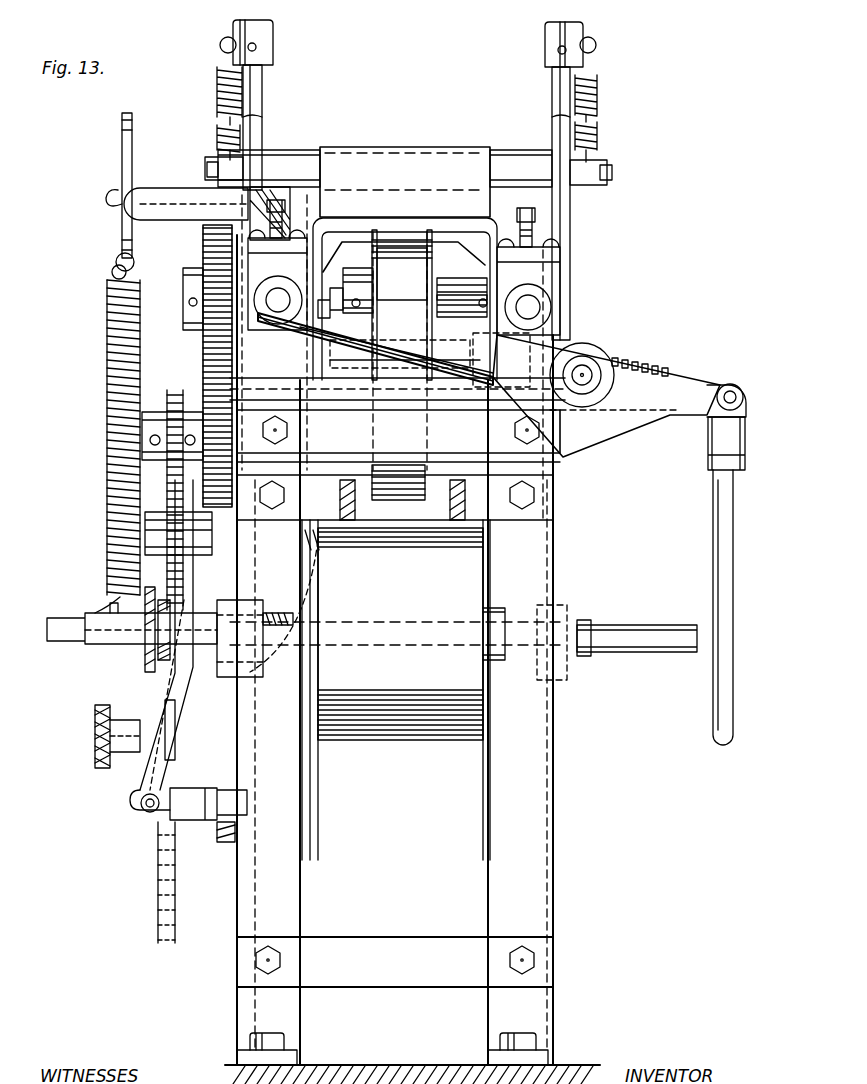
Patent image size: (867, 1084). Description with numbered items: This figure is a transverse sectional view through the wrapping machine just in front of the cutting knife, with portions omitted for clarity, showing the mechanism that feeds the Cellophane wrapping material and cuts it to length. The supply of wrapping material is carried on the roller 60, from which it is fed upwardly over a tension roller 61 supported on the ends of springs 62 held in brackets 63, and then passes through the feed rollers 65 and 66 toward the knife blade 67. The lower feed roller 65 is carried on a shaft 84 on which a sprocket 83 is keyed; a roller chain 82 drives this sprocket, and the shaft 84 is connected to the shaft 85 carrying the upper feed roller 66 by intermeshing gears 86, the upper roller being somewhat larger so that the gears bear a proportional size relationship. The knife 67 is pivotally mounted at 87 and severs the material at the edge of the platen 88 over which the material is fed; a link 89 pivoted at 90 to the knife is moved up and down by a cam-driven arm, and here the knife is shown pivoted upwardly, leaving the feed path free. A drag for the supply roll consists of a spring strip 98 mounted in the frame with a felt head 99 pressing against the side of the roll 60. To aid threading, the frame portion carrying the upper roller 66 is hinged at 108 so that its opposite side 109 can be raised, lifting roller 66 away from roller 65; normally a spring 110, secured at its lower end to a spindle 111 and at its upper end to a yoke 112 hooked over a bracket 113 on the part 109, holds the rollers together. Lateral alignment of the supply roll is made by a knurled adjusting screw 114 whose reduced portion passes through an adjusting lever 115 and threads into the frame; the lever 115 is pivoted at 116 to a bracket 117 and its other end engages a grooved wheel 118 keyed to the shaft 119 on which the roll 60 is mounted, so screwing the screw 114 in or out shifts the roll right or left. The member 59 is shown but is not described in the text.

The cylinder / pivot bar 59 is at (366, 152).
The roller 60 is at (310, 600).
The tension roller 61 is at (292, 152).
The springs 62 is at (217, 92).
The brackets 63 is at (262, 95).
The feed roller 65 is at (402, 496).
The feed roller 66 is at (427, 272).
The knife blade 67 is at (530, 352).
The roller chain 82 is at (158, 880).
The sprocket 83 is at (160, 412).
The shaft 84 is at (275, 434).
The shaft 85 is at (455, 300).
The intermeshing gears 86 is at (203, 348).
The pivot 87 is at (585, 372).
The platen 88 is at (420, 382).
The link 89 is at (733, 600).
The pivot 90 is at (738, 384).
The spring strip 98 is at (298, 598).
The felt head 99 is at (315, 540).
The hinge 108 is at (530, 305).
The frame part 109 is at (262, 288).
The spring 110 is at (107, 352).
The spindle 111 is at (80, 616).
The yoke 112 is at (122, 160).
The bracket 113 is at (110, 193).
The knurled adjusting screw 114 is at (95, 742).
The adjusting lever 115 is at (160, 700).
The pivot 116 is at (140, 815).
The bracket 117 is at (205, 822).
The grooved wheel 118 is at (145, 650).
The shaft 119 is at (640, 630).